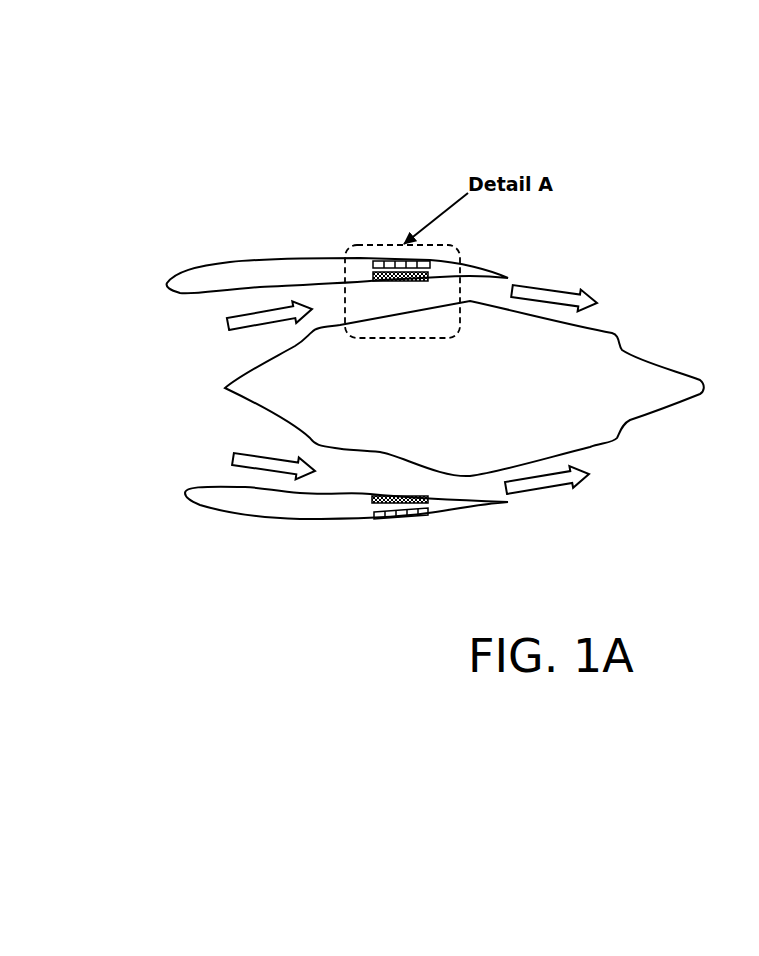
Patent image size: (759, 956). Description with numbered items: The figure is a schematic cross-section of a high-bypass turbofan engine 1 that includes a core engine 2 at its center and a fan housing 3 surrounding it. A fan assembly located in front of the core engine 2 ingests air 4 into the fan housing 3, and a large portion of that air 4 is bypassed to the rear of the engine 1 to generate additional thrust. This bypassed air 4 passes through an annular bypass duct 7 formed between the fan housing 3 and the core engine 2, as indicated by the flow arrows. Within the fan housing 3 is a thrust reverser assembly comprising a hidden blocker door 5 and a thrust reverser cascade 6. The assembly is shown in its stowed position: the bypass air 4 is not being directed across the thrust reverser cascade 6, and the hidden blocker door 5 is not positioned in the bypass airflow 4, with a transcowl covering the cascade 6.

The high-bypass turbofan engine 1 is at (183, 190).
The core engine 2 is at (441, 410).
The fan housing 3 is at (193, 267).
The air 4 is at (222, 320).
The segmented element 5 is at (378, 261).
The thrust reverser cascade 6 is at (431, 273).
The annular bypass duct 7 is at (347, 474).